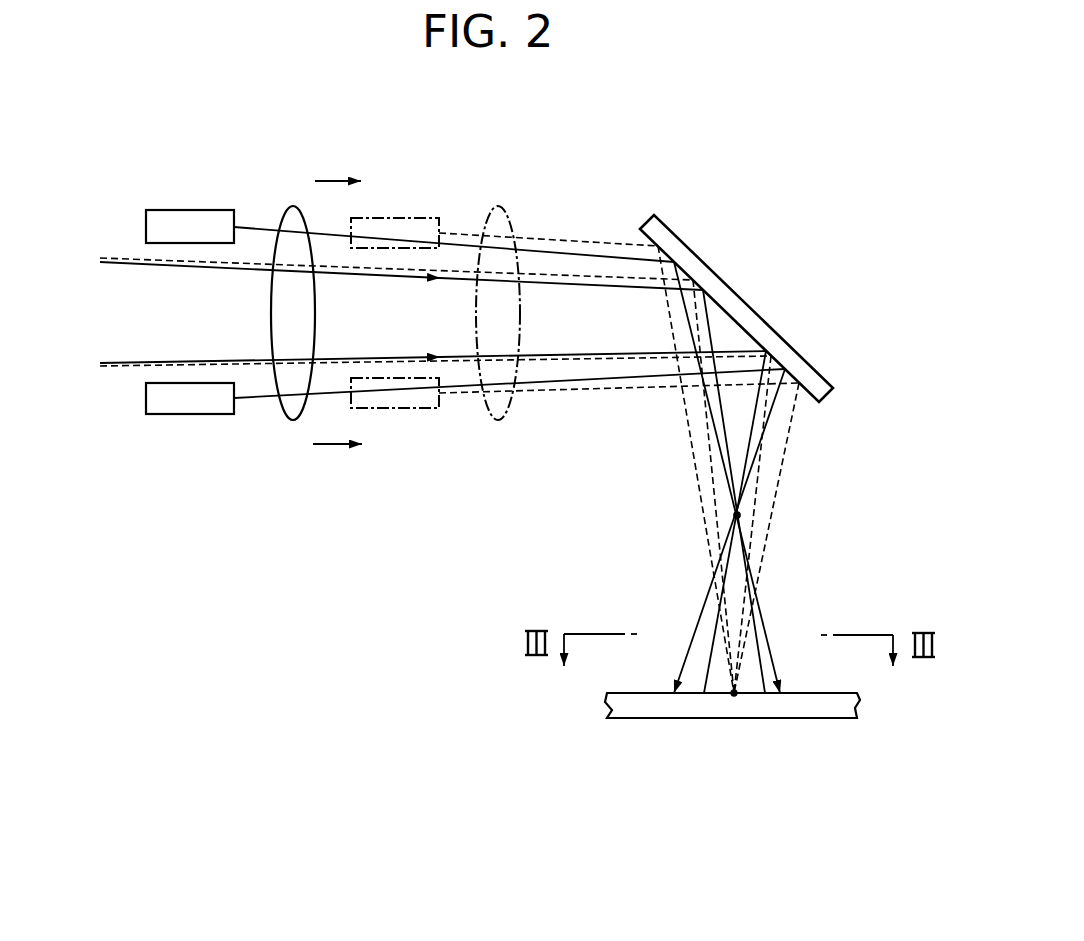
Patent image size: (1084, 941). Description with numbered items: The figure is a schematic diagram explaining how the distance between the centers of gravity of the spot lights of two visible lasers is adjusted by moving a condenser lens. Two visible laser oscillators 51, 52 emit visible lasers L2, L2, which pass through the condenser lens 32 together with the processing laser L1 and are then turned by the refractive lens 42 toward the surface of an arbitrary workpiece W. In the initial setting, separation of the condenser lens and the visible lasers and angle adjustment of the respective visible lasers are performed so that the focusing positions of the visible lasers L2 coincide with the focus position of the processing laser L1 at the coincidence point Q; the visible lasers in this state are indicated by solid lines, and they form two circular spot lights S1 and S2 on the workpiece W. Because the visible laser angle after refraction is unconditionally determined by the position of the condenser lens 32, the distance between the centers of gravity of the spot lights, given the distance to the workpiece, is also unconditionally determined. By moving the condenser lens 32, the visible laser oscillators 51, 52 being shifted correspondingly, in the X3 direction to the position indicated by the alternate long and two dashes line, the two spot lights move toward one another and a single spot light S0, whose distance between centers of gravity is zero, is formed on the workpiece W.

The visible laser oscillator 51 is at (146, 228).
The visible laser oscillator 52 is at (190, 414).
The condenser lens 32 is at (271, 313).
The refractive lens 42 is at (723, 283).
The processing laser L1 is at (614, 281).
The visible laser L2 is at (575, 240).
The coincidence point Q is at (740, 515).
The workpiece W is at (607, 707).
The spot light S0 is at (734, 693).
The spot light S1 is at (674, 693).
The spot light S2 is at (782, 693).
The X3 direction X3 is at (337, 314).